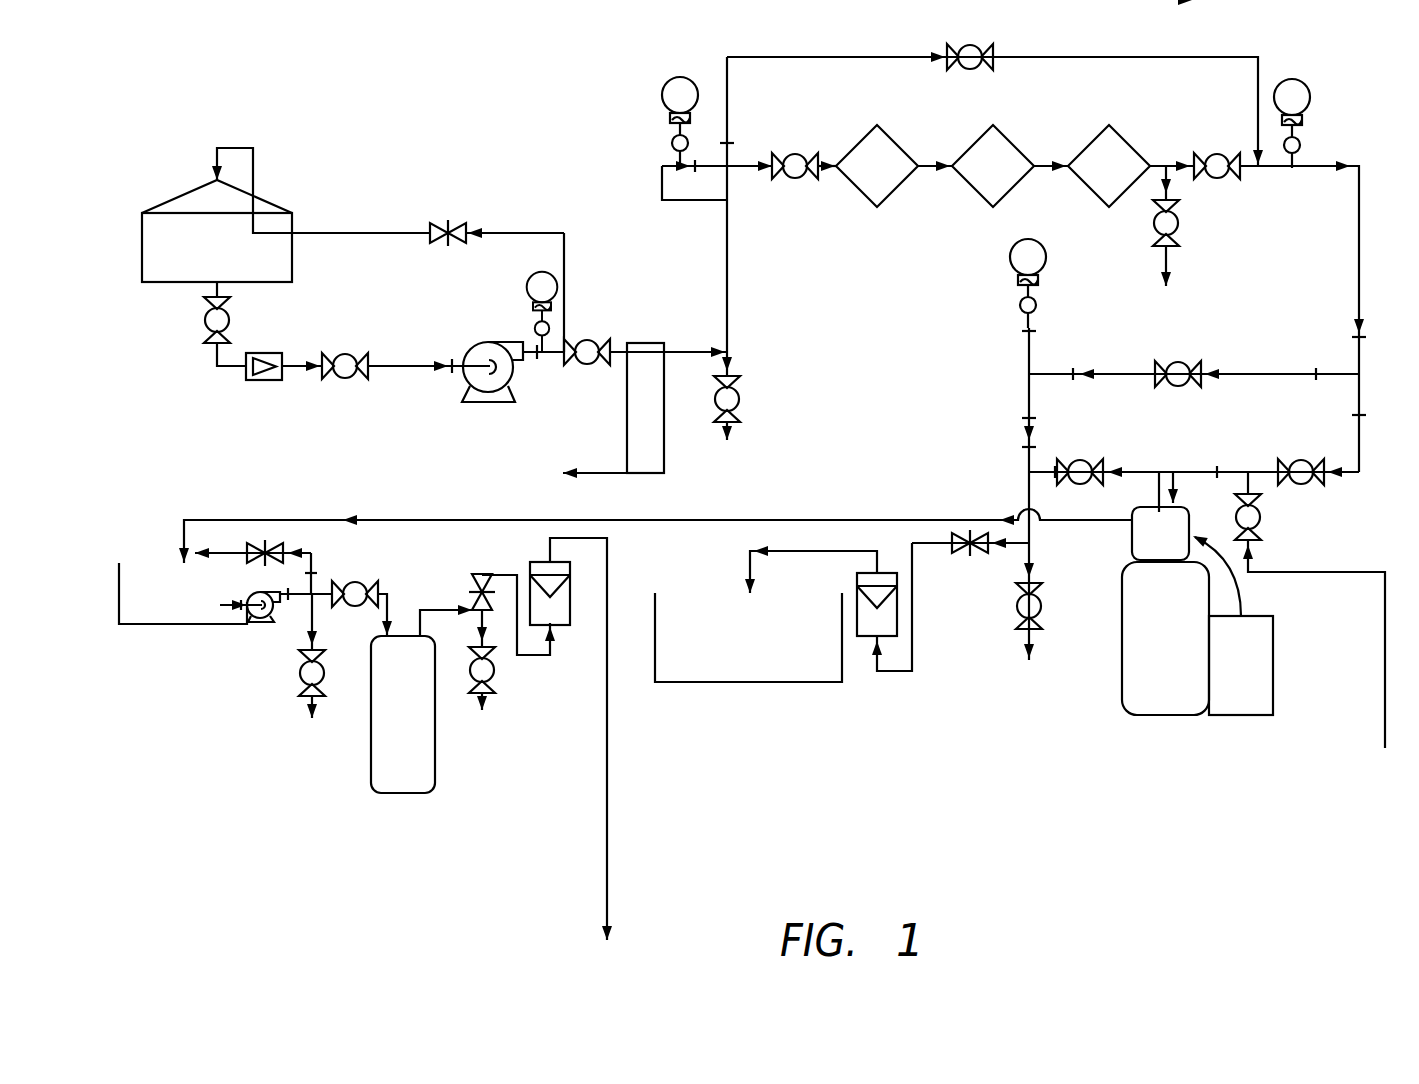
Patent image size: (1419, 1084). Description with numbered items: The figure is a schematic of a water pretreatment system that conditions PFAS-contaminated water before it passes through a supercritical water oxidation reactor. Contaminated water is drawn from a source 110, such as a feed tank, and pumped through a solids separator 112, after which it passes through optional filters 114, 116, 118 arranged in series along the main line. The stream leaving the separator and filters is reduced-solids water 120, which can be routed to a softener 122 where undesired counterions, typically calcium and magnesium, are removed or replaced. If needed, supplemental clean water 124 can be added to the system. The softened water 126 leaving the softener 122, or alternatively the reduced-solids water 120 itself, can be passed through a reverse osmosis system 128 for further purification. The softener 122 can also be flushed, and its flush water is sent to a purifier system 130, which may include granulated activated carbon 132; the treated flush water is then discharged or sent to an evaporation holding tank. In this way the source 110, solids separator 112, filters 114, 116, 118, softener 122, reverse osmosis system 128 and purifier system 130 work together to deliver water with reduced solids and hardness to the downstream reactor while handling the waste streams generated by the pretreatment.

The source 110 is at (283, 223).
The solids separator 112 is at (650, 447).
The filter 114 is at (880, 197).
The filter 116 is at (983, 190).
The filter 118 is at (1117, 197).
The reduced-solids water 120 is at (1315, 165).
The softener 122 is at (1152, 693).
The supplemental clean water 124 is at (1322, 631).
The softened water 126 is at (1128, 462).
The reverse osmosis system 128 is at (742, 665).
The purifier system 130 is at (248, 670).
The granulated activated carbon 132 is at (398, 775).